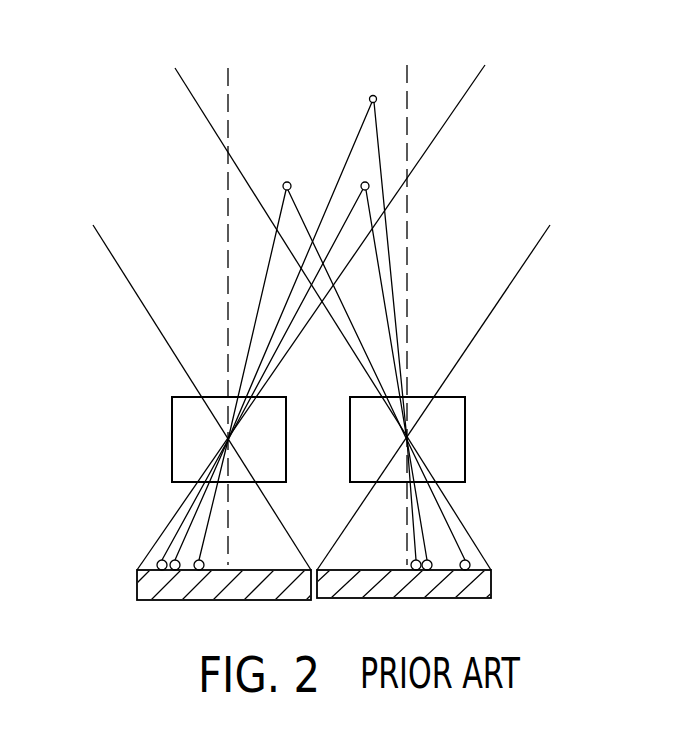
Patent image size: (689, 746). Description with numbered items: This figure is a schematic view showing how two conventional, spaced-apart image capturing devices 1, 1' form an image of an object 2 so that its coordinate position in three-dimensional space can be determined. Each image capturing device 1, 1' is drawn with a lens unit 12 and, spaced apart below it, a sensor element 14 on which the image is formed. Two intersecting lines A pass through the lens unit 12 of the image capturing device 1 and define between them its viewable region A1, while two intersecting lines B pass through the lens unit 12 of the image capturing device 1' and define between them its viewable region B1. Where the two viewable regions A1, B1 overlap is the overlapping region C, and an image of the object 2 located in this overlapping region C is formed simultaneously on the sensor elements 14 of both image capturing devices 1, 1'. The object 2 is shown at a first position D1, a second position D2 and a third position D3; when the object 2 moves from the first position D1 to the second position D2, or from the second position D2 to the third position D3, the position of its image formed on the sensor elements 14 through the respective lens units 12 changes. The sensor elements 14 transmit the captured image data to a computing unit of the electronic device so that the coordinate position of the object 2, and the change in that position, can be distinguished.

The image capturing device 1 is at (97, 356).
The image capturing device 1' is at (541, 350).
The object 2 is at (282, 186).
The lens unit 12 is at (187, 447).
The sensor element 14 is at (145, 582).
The intersecting lines A is at (288, 304).
The intersecting lines B is at (362, 305).
The overlapping region C is at (423, 125).
The viewable region A1 is at (157, 190).
The viewable region B1 is at (480, 187).
The first position D1 is at (332, 360).
The second position D2 is at (294, 360).
The third position D3 is at (295, 325).